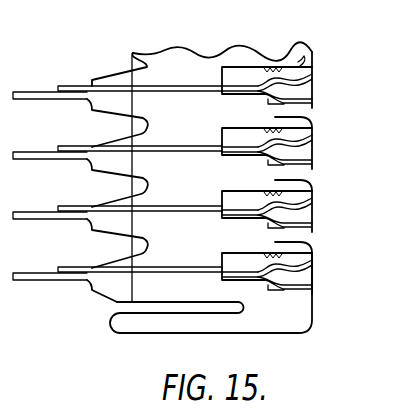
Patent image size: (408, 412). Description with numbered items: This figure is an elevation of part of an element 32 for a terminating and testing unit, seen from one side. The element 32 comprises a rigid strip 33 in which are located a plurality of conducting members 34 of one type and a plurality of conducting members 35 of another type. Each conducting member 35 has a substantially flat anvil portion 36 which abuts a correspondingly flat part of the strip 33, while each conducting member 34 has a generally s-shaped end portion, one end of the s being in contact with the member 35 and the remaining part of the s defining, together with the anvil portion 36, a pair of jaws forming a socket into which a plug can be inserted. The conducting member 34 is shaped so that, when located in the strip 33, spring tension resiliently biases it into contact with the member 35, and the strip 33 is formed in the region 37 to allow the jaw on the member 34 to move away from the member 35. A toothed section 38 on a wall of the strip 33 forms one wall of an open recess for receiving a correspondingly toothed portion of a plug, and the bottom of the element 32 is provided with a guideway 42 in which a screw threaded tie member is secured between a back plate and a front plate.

The element 32 is at (310, 322).
The rigid strip 33 is at (278, 303).
The conducting member 34 is at (311, 66).
The conducting member 35 is at (33, 92).
The anvil portion 36 is at (297, 104).
The region 37 is at (301, 55).
The toothed section 38 is at (283, 191).
The guideway 42 is at (196, 305).